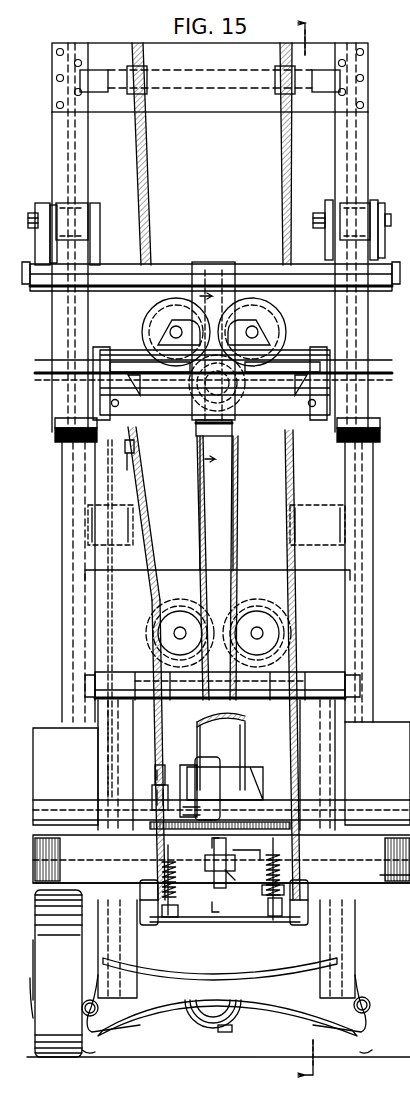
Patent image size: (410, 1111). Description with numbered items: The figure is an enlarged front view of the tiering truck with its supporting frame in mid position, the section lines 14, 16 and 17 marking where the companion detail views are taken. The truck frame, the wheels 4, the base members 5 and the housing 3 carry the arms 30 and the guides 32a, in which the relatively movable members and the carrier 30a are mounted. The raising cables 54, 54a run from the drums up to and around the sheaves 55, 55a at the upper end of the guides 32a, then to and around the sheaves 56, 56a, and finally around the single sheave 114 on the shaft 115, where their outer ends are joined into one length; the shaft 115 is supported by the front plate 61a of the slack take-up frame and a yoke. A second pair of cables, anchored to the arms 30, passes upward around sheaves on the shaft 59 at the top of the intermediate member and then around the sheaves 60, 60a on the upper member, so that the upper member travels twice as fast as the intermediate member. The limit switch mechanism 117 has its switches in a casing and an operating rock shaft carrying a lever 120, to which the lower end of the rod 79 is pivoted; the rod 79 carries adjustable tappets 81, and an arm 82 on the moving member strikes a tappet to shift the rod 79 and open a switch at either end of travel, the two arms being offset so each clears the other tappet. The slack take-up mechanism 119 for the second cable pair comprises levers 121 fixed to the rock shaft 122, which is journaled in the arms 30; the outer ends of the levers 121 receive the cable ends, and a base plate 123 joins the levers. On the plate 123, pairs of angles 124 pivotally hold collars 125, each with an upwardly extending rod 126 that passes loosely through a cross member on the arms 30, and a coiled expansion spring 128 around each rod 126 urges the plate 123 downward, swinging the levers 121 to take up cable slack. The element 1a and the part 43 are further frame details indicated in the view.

The section line 14 is at (294, 550).
The shaft 59 is at (206, 90).
The cable 54 is at (147, 236).
The cable 54a is at (282, 176).
The slack take-up frame plate 61a is at (182, 425).
The sheave 60 is at (170, 290).
The sheave 60a is at (260, 290).
The sheave 55 is at (140, 355).
The sheave 55a is at (288, 355).
The sheave 114 is at (170, 395).
The shaft 115 is at (258, 395).
The section line 16 is at (207, 379).
The carrier 30a is at (52, 440).
The tappet 81 is at (125, 448).
The arm 82 is at (150, 496).
The sheave 56 is at (180, 600).
The sheave 56a is at (257, 600).
The rod 79 is at (160, 722).
The arm 30 is at (315, 733).
The guide 32a is at (100, 766).
The limit switch mechanism 117 is at (200, 760).
The lever 120 is at (210, 806).
The rod 126 is at (288, 822).
The section line 17 is at (207, 878).
The rock shaft 122 is at (248, 852).
The coiled expansion spring 128 is at (268, 890).
The frame member 1a is at (330, 862).
The wheel 4 is at (38, 895).
The leg 5 is at (88, 1045).
The differential housing 3 is at (202, 1022).
The lever 121 is at (148, 925).
The base plate 123 is at (172, 930).
The angle 124 is at (178, 920).
The slack take-up mechanism 119 is at (225, 932).
The collar 125 is at (274, 918).
The bracket 43 is at (403, 193).